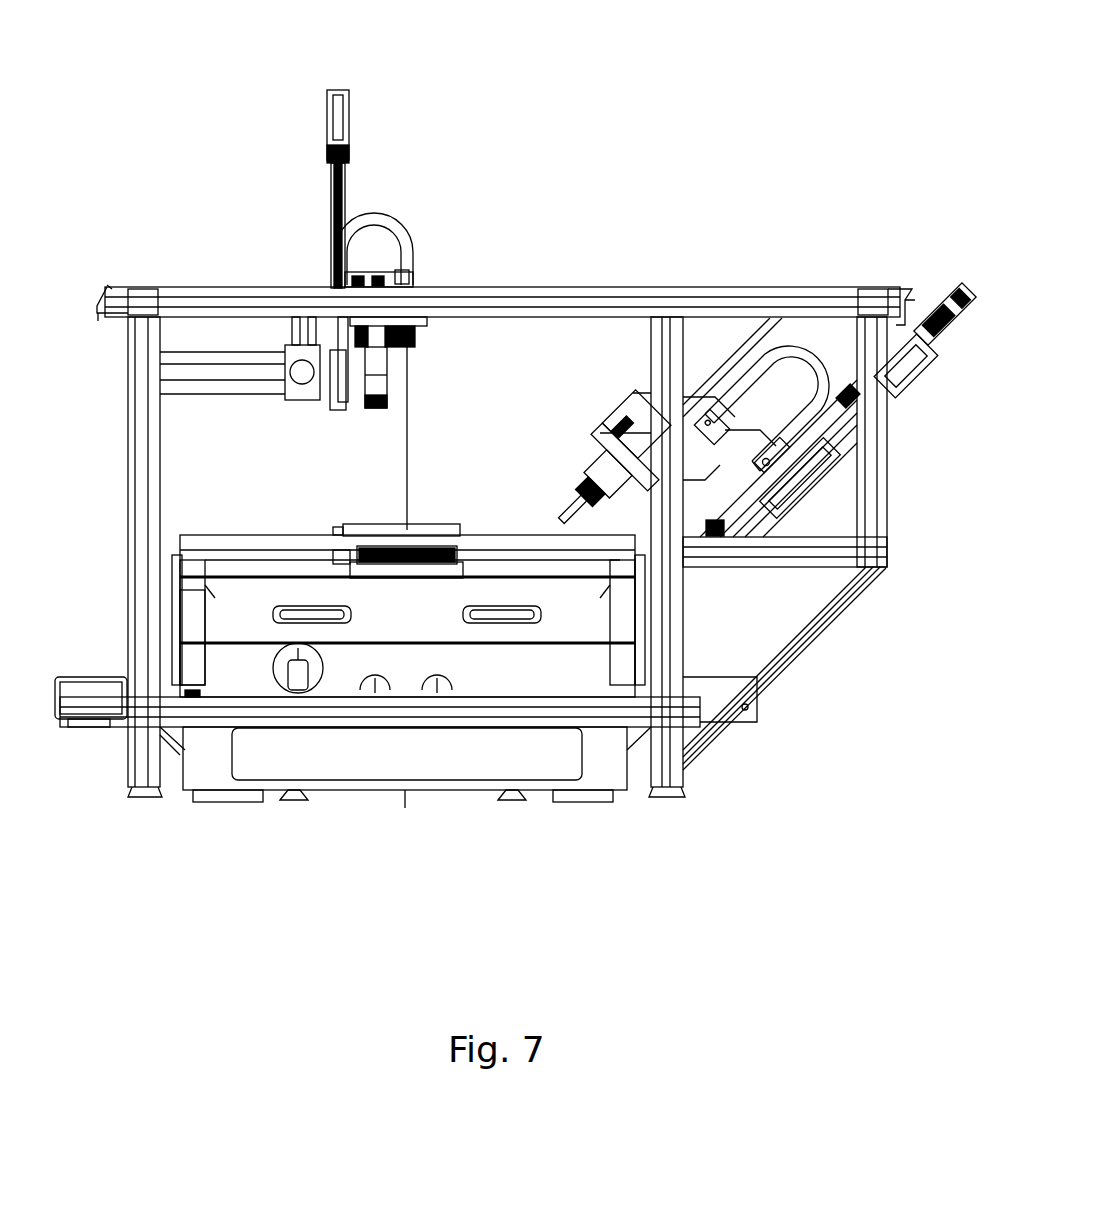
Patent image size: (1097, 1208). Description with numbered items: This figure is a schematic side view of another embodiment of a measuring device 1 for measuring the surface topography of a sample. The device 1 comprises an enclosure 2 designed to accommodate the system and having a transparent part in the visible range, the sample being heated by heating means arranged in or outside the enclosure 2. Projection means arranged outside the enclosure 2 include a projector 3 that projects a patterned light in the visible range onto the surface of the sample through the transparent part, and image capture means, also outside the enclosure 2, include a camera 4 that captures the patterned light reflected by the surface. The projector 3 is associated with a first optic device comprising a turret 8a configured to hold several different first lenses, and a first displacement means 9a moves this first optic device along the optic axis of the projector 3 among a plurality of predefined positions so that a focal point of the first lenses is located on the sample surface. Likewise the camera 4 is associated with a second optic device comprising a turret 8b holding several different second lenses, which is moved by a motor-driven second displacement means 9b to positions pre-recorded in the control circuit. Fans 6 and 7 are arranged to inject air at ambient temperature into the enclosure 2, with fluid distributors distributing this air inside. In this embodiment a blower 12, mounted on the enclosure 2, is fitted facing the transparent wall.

The measuring device 1 is at (642, 108).
The enclosure 2 is at (535, 672).
The projector 3 is at (633, 410).
The camera 4 is at (383, 277).
The fan 6 is at (90, 718).
The fan 7 is at (747, 707).
The turret 8a is at (590, 503).
The turret 8b is at (388, 357).
The first displacement means 9a is at (783, 467).
The second displacement means 9b is at (340, 208).
The blower 12 is at (423, 528).